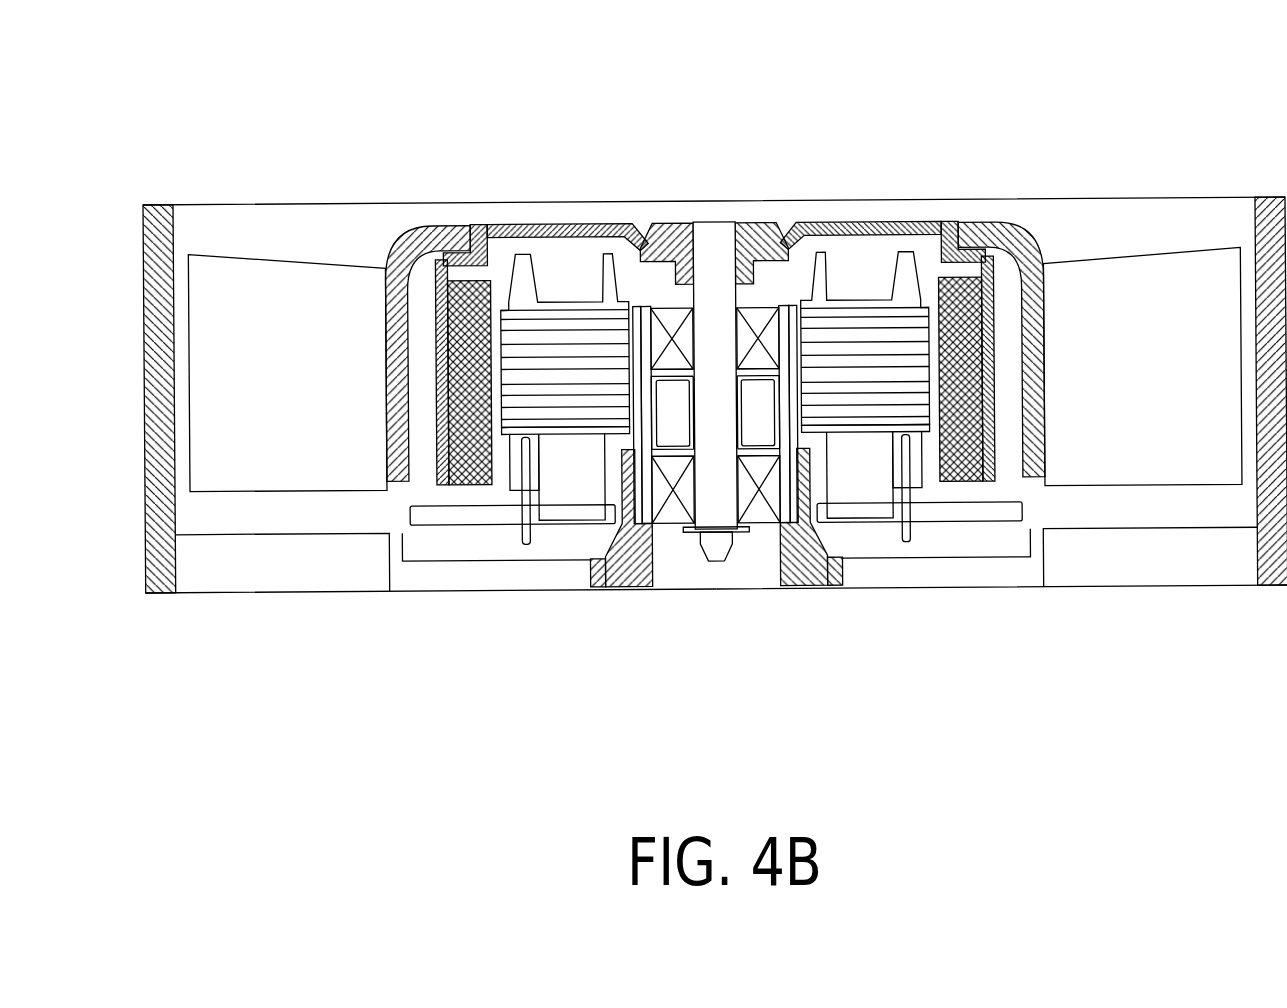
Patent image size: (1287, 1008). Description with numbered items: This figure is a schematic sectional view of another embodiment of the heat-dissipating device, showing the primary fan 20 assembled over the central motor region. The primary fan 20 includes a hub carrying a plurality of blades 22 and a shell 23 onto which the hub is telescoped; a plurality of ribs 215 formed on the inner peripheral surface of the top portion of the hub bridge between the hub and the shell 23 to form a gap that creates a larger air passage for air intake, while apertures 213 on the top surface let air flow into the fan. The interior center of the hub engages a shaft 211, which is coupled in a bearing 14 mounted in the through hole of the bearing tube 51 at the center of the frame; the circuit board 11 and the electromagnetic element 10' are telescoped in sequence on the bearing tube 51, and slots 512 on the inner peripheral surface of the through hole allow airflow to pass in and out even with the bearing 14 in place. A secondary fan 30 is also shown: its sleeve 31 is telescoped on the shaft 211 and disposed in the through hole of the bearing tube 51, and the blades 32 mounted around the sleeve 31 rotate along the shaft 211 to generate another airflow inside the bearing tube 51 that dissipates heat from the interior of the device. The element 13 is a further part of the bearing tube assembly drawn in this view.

The primary fan 20 is at (360, 212).
The blades 22 is at (1075, 297).
The shell 23 is at (995, 393).
The apertures 213 is at (885, 231).
The ribs 215 is at (465, 255).
The shaft 211 is at (715, 272).
The secondary fan 30 is at (706, 445).
The bearing tube 13 is at (648, 314).
The sleeve 31 is at (780, 463).
The bearing 14 is at (670, 512).
The bearing tube 51 is at (608, 598).
The blades 32 is at (662, 421).
The slots 512 is at (740, 414).
The stator 10' is at (714, 291).
The circuit board 11 is at (470, 515).